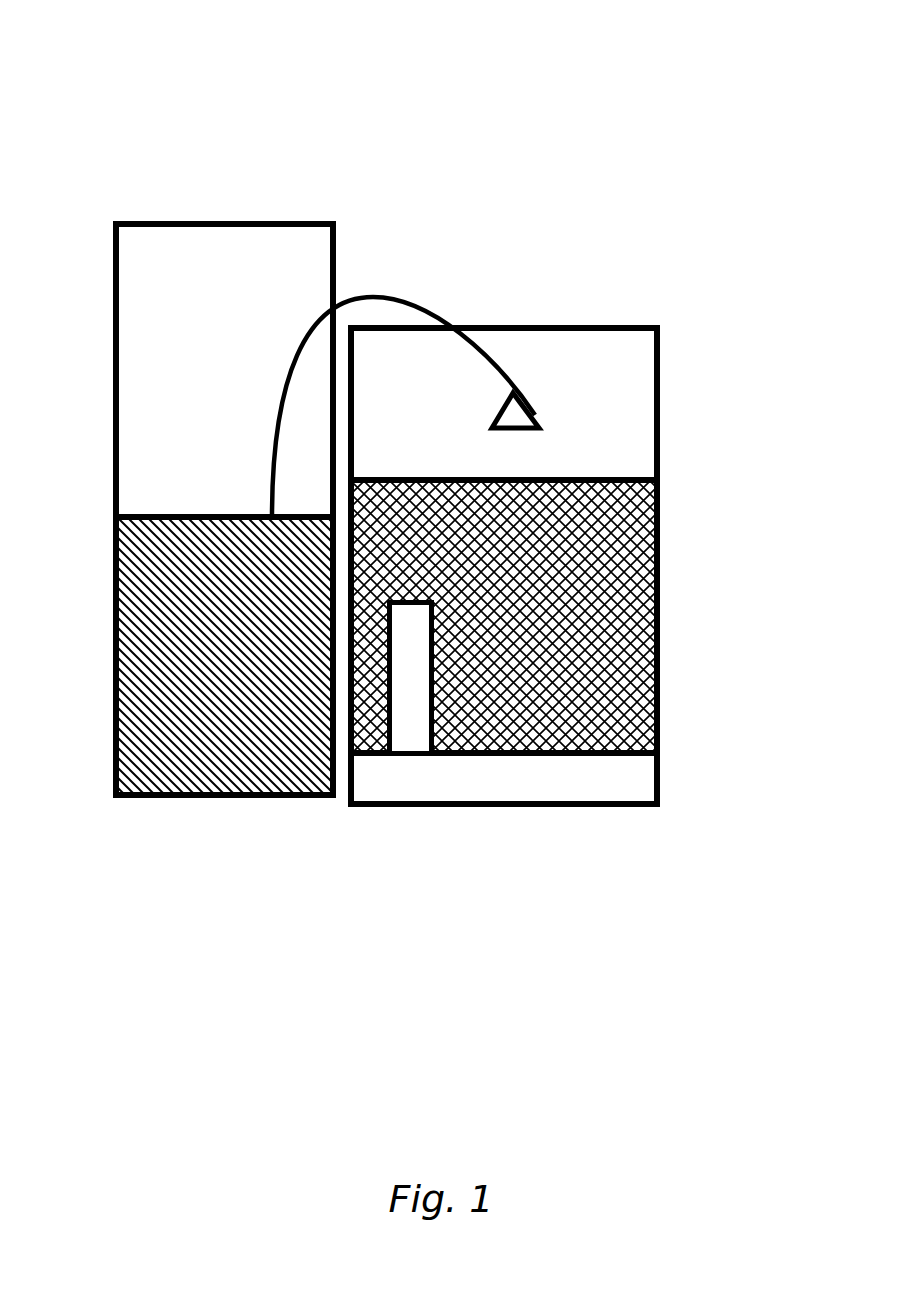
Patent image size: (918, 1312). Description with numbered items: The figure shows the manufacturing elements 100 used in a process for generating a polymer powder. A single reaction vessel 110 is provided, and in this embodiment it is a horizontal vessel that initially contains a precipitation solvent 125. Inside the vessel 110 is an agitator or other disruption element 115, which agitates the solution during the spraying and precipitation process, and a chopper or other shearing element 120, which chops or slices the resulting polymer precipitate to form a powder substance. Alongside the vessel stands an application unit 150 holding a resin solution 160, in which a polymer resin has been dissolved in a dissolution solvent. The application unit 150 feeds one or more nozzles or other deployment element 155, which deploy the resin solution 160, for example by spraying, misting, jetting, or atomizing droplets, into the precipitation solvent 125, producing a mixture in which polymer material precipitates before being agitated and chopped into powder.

The manufacturing elements 100 is at (712, 47).
The reaction vessel 110 is at (663, 437).
The agitator or other disruption element 115 is at (655, 780).
The chopper or other shearing element 120 is at (412, 758).
The precipitation solvent 125 is at (645, 560).
The application unit 150 is at (225, 221).
The nozzles or other deployment element 155 is at (530, 405).
The resin solution 160 is at (217, 777).